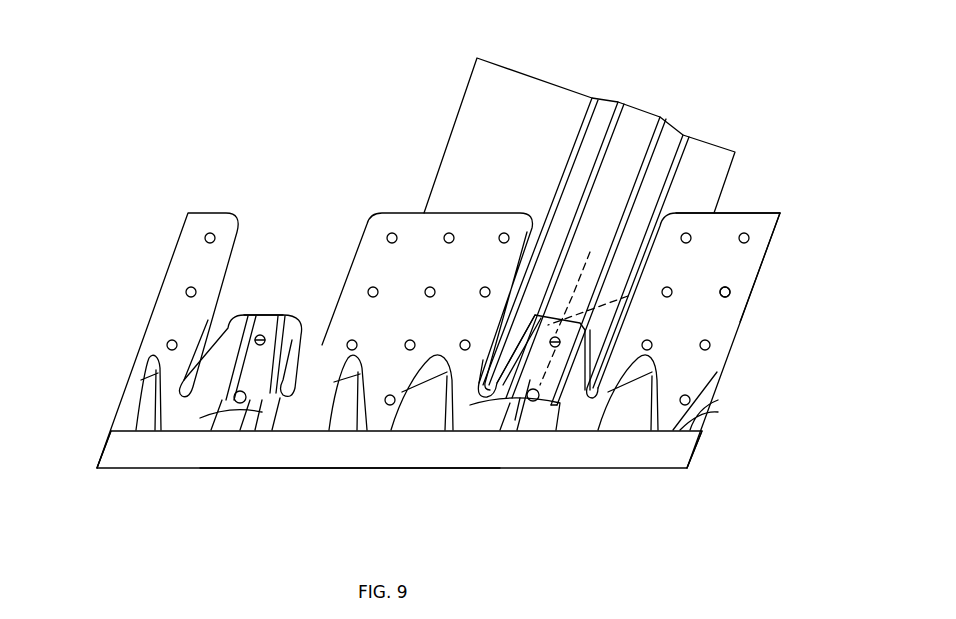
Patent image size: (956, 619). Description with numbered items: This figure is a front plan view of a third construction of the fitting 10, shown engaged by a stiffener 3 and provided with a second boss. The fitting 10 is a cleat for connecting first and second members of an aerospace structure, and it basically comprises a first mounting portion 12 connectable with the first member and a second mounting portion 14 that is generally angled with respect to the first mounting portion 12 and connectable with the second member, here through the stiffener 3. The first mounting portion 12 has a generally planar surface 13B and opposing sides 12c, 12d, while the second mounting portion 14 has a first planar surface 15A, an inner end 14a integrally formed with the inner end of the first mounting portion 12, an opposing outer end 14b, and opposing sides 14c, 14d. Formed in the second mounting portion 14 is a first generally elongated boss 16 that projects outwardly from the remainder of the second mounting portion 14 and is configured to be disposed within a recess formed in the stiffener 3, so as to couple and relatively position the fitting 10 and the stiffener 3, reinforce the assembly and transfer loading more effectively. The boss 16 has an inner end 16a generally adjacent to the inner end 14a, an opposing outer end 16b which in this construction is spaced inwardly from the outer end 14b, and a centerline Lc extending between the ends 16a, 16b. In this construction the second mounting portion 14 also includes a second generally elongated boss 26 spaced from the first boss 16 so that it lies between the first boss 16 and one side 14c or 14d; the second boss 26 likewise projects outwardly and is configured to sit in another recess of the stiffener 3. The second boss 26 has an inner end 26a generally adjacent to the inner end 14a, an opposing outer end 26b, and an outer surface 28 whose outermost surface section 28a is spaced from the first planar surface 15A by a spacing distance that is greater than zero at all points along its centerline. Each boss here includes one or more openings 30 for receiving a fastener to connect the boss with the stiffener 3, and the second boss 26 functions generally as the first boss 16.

The stiffener 3 is at (542, 82).
The fitting 10 is at (250, 164).
The first mounting portion 12 is at (675, 484).
The side of first mounting portion 12c is at (695, 456).
The side of first mounting portion 12d is at (100, 452).
The second planar surface of first mounting portion 13B is at (248, 450).
The second mounting portion 14 is at (717, 309).
The inner end of second mounting portion 14a is at (672, 430).
The outer end of second mounting portion 14b is at (750, 211).
The side of second mounting portion 14c is at (770, 254).
The side of second mounting portion 14d is at (178, 259).
The first planar surface of second mounting portion 15A is at (745, 270).
The elongated boss 16 is at (205, 380).
The inner end of boss 16a is at (235, 414).
The outer end of boss 16b is at (266, 313).
The second elongated boss 26 is at (500, 414).
The inner end of second boss 26a is at (572, 408).
The outer end of second boss 26b is at (573, 309).
The outer surface of second boss 28 is at (557, 370).
The outermost surface section 28a is at (520, 399).
The opening 30 is at (246, 392).
The centerline Lc is at (628, 296).